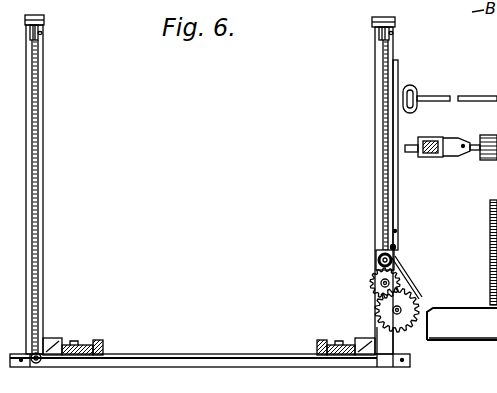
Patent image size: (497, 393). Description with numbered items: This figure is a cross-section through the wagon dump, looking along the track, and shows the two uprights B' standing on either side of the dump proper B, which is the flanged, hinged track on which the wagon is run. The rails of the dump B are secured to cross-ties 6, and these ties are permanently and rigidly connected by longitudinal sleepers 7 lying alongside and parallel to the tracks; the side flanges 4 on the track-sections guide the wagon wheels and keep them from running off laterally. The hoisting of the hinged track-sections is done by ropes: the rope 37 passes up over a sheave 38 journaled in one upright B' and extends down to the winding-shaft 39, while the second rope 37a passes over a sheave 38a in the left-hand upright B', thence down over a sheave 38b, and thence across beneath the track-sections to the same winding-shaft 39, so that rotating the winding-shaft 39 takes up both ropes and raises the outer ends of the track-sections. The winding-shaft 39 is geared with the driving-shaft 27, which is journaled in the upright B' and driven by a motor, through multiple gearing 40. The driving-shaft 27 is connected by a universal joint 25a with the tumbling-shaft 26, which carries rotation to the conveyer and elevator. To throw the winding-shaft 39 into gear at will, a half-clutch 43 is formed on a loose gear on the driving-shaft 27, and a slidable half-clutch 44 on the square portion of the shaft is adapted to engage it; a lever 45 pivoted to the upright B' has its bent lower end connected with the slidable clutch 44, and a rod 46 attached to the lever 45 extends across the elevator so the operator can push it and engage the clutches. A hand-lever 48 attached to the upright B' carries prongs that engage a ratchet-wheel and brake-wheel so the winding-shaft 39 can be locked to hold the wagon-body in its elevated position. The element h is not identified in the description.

The uprights B' is at (210, 184).
The rope 37a is at (36, 200).
The sheave 38a is at (44, 32).
The sheave 38 is at (396, 32).
The rope 37 is at (391, 178).
The dump proper B is at (210, 347).
The cross-ties 6 is at (193, 372).
The sheave 38b is at (42, 370).
The sleepers 7 is at (209, 334).
The hatched clamp plate h is at (208, 341).
The side flanges 4 is at (95, 342).
The tumbling-shaft 26 is at (376, 262).
The driving-shaft 27 is at (470, 158).
The slidable half-clutch 44 is at (481, 162).
The half-clutch 43 is at (490, 165).
The rod 46 is at (445, 97).
The universal joint 25a is at (452, 125).
The lever 45 is at (397, 231).
The multiple gearing 40 is at (395, 247).
The hand-lever 48 is at (400, 268).
The winding-shaft 39 is at (399, 309).